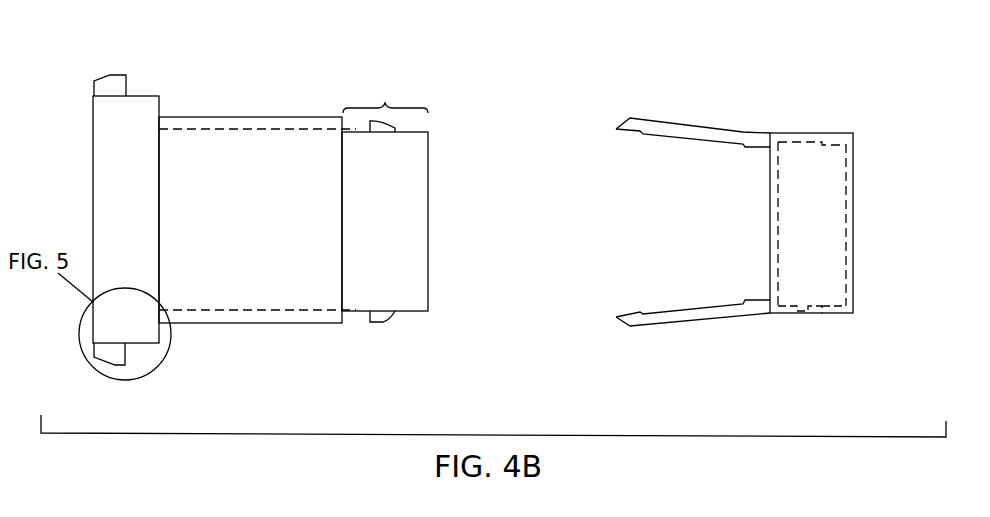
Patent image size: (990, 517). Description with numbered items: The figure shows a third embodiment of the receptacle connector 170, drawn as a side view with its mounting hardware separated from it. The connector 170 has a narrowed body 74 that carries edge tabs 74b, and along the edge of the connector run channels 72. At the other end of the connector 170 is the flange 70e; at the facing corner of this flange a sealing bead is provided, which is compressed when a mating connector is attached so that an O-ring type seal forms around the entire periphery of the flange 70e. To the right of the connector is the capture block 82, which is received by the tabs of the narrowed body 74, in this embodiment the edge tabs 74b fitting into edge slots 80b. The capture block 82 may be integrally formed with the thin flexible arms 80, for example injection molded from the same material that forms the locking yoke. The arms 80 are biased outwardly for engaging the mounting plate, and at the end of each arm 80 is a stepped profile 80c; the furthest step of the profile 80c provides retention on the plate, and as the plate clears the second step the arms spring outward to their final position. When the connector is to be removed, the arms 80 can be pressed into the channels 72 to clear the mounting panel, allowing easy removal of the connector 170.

The flange 70e is at (162, 97).
The channels 72 is at (203, 129).
The connector 170 is at (265, 227).
The narrowed body 74 is at (385, 103).
The edge tabs 74b is at (385, 322).
The flexible arms 80 is at (692, 125).
The edge slots 80b is at (808, 318).
The stepped profile 80c is at (618, 330).
The capture block 82 is at (823, 168).